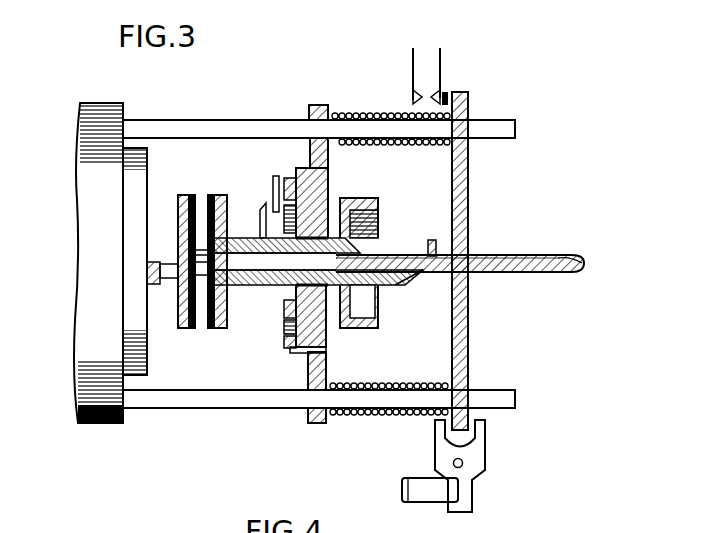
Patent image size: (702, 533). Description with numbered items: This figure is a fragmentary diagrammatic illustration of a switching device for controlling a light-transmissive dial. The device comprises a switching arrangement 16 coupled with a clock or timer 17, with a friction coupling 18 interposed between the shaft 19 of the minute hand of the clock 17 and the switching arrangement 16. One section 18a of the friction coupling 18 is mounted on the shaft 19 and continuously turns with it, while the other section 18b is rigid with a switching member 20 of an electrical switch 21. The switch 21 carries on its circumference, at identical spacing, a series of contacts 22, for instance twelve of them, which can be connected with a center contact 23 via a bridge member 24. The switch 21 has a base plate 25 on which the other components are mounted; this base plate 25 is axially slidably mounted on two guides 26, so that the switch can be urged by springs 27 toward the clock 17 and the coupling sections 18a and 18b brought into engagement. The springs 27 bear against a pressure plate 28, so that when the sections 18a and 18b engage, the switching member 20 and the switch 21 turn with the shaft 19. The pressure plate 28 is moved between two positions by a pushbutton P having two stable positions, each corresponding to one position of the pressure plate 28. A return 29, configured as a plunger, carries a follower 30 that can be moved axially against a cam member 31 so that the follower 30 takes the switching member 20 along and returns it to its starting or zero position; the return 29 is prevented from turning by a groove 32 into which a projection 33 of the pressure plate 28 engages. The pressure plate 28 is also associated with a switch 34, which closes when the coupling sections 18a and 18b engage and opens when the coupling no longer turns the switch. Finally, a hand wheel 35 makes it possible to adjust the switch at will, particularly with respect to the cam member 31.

The switching arrangement 16 is at (308, 108).
The clock 17 is at (90, 157).
The friction coupling 18 is at (203, 328).
The coupling section 18a is at (180, 195).
The coupling section 18b is at (214, 195).
The shaft 19 is at (160, 274).
The switching member 20 is at (232, 285).
The electrical switch 21 is at (262, 206).
The contacts 22 is at (290, 350).
The center contact 23 is at (290, 328).
The bridge member 24 is at (276, 178).
The base plate 25 is at (326, 365).
The guides 26 is at (497, 128).
The springs 27 is at (376, 113).
The pressure plate 28 is at (466, 375).
The return 29 is at (570, 273).
The follower 30 is at (430, 240).
The cam member 31 is at (410, 285).
The groove 32 is at (522, 256).
The projection 33 is at (468, 235).
The switch 34 is at (441, 60).
The hand wheel 35 is at (360, 198).
The pushbutton P is at (432, 490).